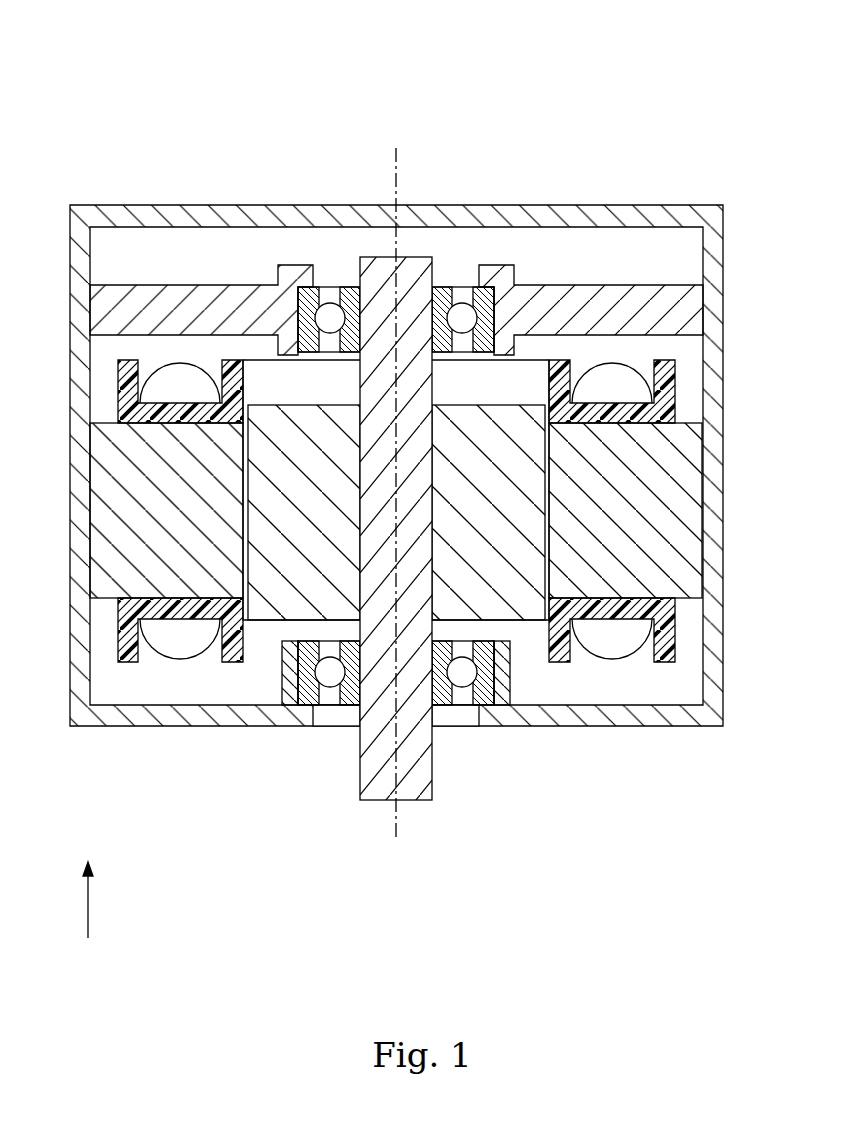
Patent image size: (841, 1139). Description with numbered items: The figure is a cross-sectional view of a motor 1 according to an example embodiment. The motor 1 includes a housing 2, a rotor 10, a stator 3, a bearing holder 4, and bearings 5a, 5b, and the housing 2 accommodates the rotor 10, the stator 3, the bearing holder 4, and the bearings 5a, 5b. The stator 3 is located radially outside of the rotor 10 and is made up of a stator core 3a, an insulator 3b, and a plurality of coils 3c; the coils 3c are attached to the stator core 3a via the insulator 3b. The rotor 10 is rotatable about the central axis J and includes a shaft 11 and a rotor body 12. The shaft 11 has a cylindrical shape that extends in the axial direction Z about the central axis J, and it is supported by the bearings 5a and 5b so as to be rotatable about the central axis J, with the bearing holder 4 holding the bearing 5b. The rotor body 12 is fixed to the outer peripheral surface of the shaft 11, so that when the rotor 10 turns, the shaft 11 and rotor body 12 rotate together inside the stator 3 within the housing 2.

The motor 1 is at (680, 102).
The housing 2 is at (689, 207).
The stator 3 is at (682, 413).
The stator core 3a is at (676, 512).
The insulator 3b is at (670, 624).
The coils 3c is at (655, 392).
The bearing holder 4 is at (676, 314).
The bearing 5a is at (462, 681).
The bearing 5b is at (461, 312).
The rotor 10 is at (350, 796).
The shaft 11 is at (428, 778).
The rotor body 12 is at (268, 602).
The central axis J is at (398, 168).
The axial direction Z is at (88, 889).